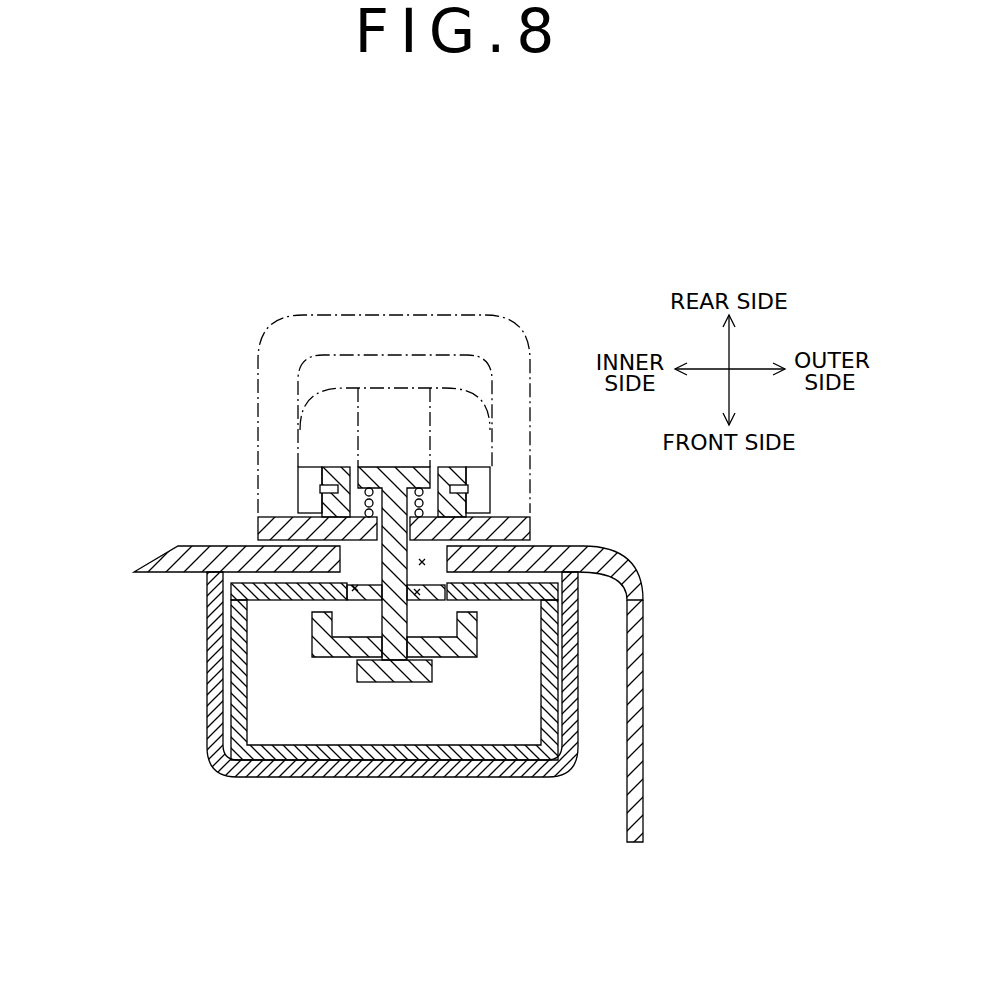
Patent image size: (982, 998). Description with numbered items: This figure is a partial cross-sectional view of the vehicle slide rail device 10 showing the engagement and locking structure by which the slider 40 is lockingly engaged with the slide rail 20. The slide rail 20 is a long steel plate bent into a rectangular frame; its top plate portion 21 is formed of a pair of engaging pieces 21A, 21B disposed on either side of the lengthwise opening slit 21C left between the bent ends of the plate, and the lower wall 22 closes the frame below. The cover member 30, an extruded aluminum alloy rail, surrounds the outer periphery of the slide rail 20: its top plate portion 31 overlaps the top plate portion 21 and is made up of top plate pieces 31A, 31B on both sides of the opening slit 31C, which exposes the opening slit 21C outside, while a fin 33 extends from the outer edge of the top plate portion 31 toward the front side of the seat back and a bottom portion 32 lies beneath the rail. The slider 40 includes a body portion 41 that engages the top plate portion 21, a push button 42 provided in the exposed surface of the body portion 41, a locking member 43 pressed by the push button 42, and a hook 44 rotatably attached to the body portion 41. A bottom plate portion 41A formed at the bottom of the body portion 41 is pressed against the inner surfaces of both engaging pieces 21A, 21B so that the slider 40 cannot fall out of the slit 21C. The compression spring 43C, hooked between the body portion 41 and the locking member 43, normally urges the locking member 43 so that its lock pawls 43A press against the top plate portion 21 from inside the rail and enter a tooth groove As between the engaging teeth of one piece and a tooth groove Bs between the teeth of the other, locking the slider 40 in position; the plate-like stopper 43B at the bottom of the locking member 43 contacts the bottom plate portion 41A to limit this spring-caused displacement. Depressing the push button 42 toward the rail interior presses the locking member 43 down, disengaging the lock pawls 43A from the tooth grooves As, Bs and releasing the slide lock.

The vehicle slide rail device 10 is at (181, 349).
The slide rail 20 is at (234, 722).
The top plate portion 21 is at (409, 629).
The engaging piece 21A is at (245, 603).
The engaging piece 21B is at (520, 588).
The opening slit 21C is at (412, 600).
The inner case body 22 is at (483, 755).
The cover member 30 is at (158, 552).
The top plate portion 31 is at (387, 523).
The top plate piece 31A is at (253, 547).
The top plate piece 31B is at (538, 560).
The opening slit 31C is at (424, 561).
The bottom portion 32 is at (458, 765).
The fin 33 is at (635, 705).
The slider 40 is at (330, 473).
The body portion 41 is at (273, 527).
The bottom plate portion 41A is at (350, 662).
The push button 42 is at (397, 397).
The locking member 43 is at (318, 648).
The lock pawl 43A is at (342, 593).
The stopper 43B is at (390, 677).
The compression spring 43C is at (328, 493).
The hook 44 is at (330, 328).
The tooth groove As is at (347, 602).
The tooth groove Bs is at (447, 597).